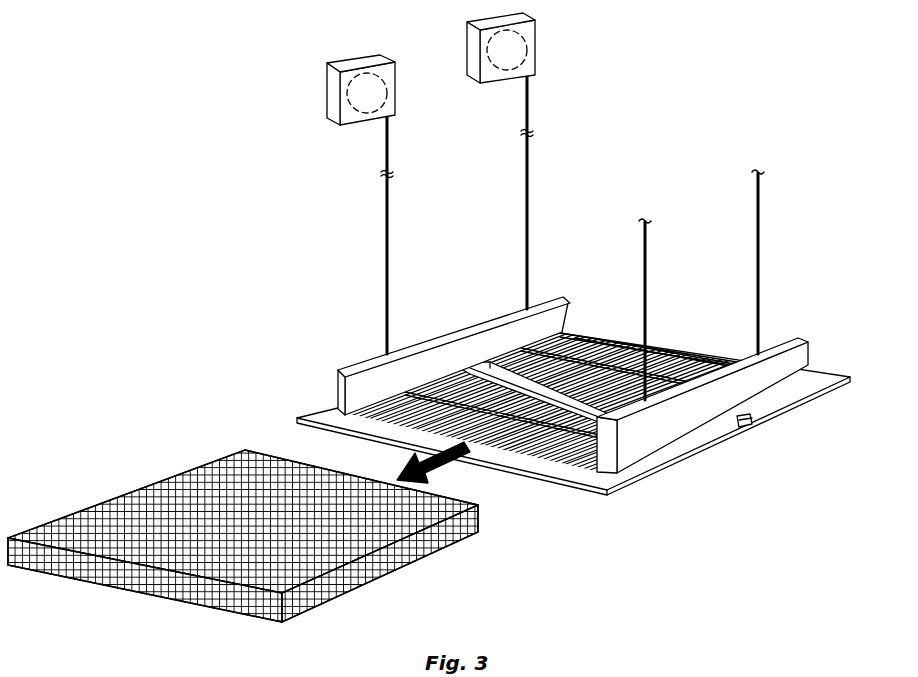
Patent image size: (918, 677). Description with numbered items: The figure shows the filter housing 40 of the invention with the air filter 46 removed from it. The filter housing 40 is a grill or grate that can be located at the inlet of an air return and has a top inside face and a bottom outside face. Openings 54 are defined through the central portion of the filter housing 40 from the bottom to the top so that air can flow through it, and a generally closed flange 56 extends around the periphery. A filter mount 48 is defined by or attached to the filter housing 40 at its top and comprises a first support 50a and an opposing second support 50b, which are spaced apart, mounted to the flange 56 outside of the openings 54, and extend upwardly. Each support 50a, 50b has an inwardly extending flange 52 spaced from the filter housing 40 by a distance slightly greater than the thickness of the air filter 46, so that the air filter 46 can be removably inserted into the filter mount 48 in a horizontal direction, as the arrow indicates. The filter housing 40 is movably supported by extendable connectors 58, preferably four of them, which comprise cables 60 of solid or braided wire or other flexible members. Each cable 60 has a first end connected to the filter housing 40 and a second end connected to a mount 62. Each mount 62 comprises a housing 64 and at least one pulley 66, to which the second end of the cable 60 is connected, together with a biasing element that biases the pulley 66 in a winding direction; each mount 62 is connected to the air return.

The filter housing 40 is at (768, 432).
The air filter 46 is at (427, 557).
The filter mount 48 is at (588, 388).
The first support 50a is at (657, 427).
The second support 50b is at (348, 390).
The inwardly extending flange 52 is at (452, 333).
The openings 54 is at (611, 350).
The flange 56 is at (812, 382).
The extendable connectors 58 is at (352, 230).
The cables 60 is at (528, 98).
The mount 62 is at (310, 80).
The housing 64 is at (355, 62).
The pulley 66 is at (345, 87).